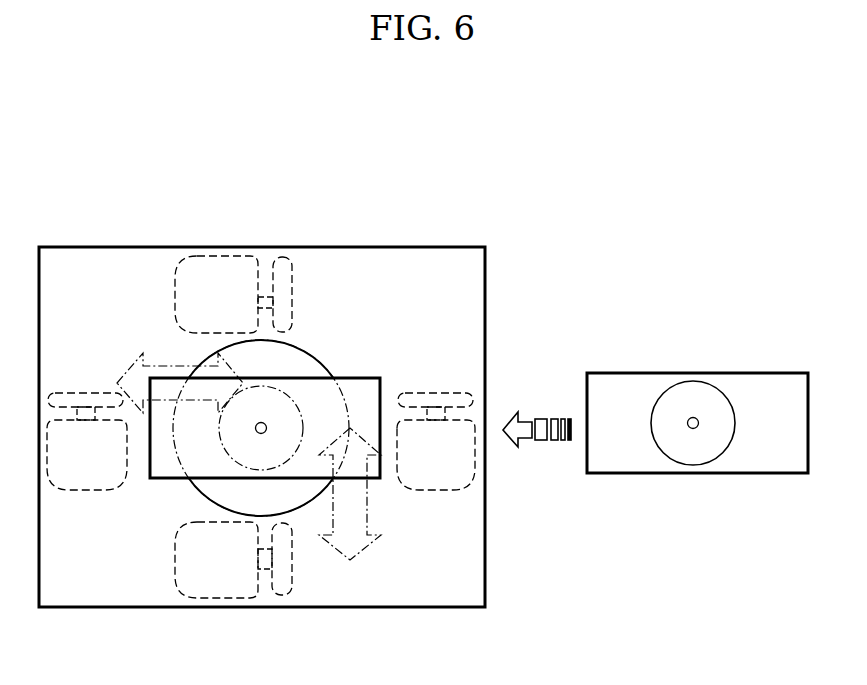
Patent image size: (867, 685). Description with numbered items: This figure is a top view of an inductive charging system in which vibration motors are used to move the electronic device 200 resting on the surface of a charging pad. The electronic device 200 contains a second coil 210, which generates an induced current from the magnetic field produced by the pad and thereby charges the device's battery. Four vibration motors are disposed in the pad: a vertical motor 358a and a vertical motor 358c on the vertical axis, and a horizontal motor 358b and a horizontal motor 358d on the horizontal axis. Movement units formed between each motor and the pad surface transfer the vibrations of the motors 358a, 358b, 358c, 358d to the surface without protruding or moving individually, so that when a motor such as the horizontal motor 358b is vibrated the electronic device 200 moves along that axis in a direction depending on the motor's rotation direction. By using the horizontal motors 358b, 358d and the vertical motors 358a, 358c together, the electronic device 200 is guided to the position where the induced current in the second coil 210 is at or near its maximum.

The electronic device 200 is at (360, 387).
The second coil 210 is at (693, 462).
The vertical motor 358a is at (232, 263).
The horizontal motor 358b is at (468, 460).
The vertical motor 358c is at (224, 594).
The horizontal motor 358d is at (83, 490).